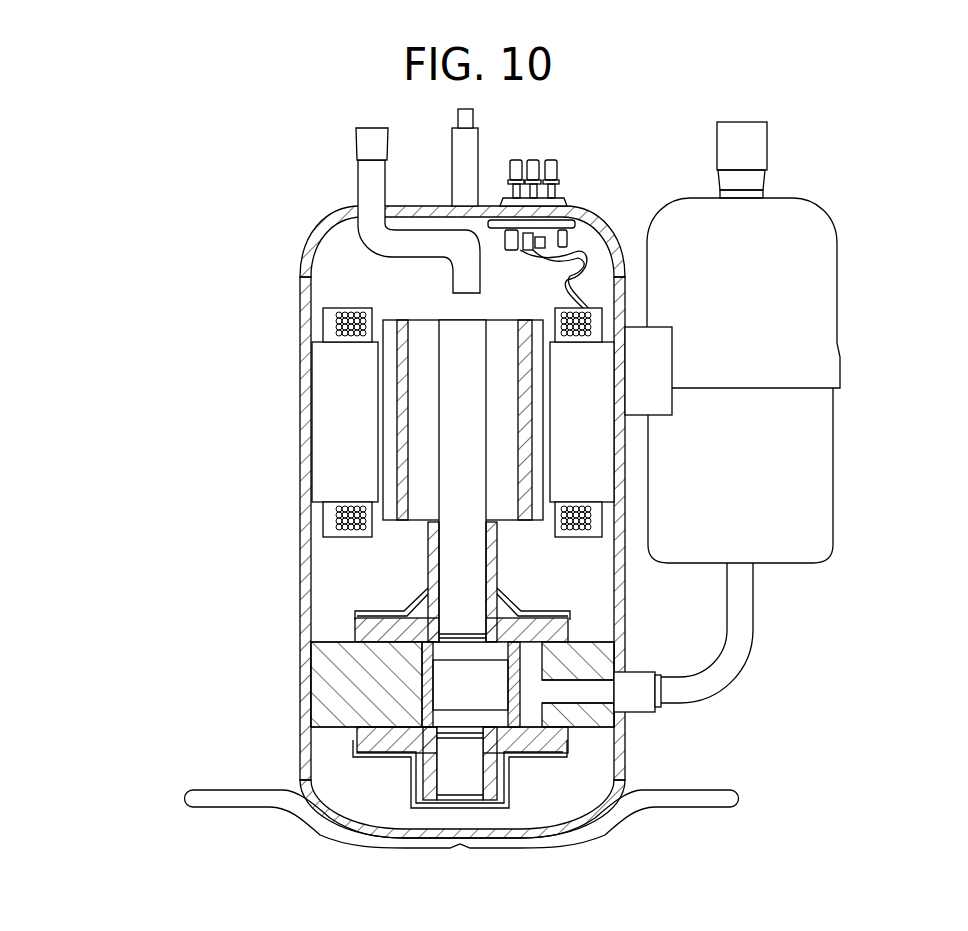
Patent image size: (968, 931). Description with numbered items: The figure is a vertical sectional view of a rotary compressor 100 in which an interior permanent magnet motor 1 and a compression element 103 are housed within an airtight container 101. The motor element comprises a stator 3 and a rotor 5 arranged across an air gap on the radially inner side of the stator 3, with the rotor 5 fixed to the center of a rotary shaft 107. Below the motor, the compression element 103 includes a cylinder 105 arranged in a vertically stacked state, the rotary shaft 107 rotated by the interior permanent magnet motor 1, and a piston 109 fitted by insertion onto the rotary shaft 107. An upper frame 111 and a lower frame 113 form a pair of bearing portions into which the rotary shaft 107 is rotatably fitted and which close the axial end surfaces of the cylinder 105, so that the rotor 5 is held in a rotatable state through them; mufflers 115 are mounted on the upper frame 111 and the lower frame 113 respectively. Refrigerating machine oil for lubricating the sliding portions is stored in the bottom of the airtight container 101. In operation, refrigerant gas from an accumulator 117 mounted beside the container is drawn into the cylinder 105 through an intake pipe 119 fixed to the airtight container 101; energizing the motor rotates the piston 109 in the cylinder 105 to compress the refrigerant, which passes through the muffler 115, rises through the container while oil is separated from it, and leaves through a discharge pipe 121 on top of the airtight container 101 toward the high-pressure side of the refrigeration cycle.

The rotary compressor 100 is at (55, 191).
The interior permanent magnet motor 1 is at (340, 287).
The stator 3 is at (298, 368).
The rotor 5 is at (388, 451).
The airtight container 101 is at (328, 224).
The compression element 103 is at (320, 754).
The cylinder 105 is at (333, 648).
The rotary shaft 107 is at (455, 578).
The piston 109 is at (420, 676).
The upper frame 111 is at (525, 628).
The lower frame 113 is at (555, 745).
The muffler 115 is at (410, 604).
The accumulator 117 is at (838, 319).
The intake pipe 119 is at (752, 648).
The discharge pipe 121 is at (356, 191).